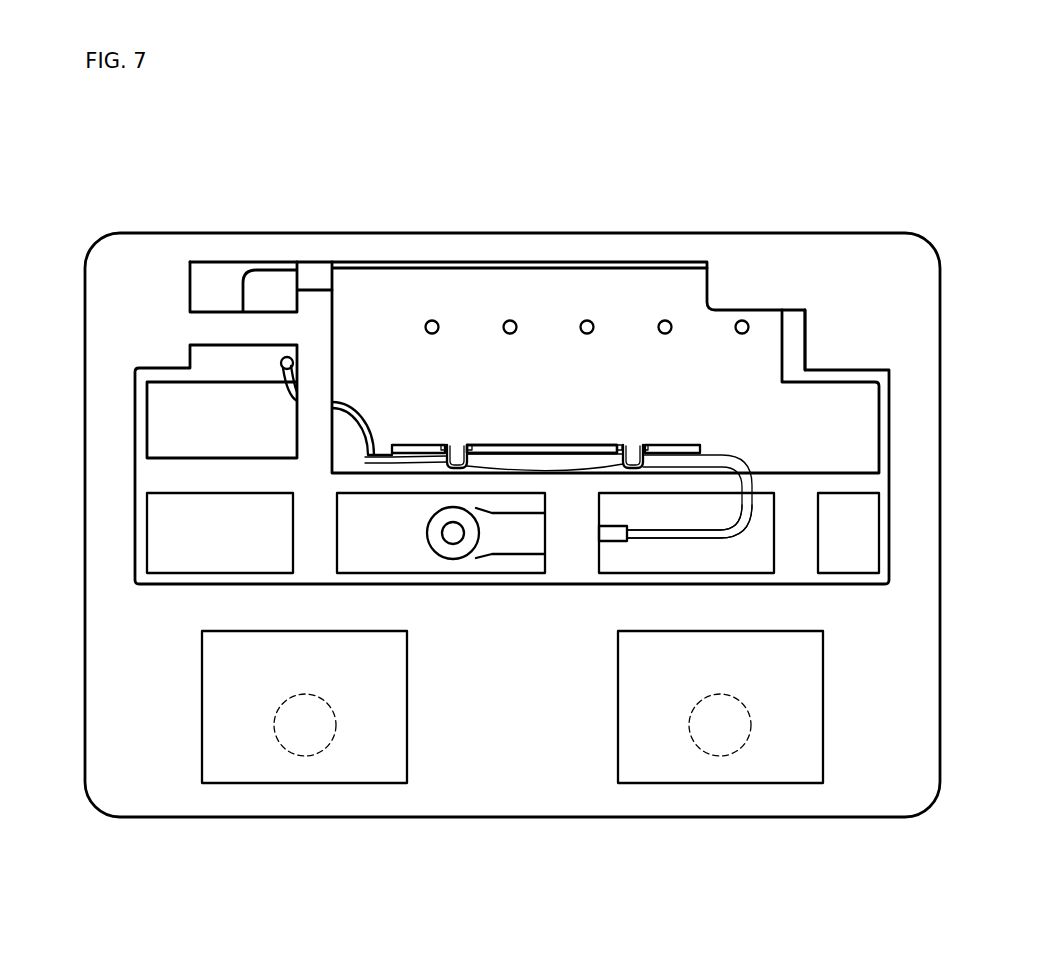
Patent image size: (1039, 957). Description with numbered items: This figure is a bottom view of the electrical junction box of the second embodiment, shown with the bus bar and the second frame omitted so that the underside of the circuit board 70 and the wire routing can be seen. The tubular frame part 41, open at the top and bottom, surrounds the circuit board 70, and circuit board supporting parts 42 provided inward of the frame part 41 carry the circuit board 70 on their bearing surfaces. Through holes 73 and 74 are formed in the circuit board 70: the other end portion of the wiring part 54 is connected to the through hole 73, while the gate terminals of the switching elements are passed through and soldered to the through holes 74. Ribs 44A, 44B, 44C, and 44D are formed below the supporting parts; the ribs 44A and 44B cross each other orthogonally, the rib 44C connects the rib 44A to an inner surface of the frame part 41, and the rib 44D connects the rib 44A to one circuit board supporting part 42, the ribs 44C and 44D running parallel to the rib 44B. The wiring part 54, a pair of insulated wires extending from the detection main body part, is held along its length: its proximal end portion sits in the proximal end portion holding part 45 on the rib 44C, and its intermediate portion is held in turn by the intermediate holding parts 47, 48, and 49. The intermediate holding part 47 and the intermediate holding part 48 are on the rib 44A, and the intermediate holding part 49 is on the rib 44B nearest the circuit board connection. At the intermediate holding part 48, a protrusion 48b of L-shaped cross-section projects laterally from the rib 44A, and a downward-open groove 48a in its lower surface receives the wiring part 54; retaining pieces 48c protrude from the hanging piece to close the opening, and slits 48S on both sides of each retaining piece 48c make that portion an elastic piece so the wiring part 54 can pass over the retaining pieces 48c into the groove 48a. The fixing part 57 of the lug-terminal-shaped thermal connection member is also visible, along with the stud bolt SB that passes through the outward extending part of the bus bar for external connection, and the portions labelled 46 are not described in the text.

The frame part 41 is at (940, 660).
The circuit board supporting part 42 is at (290, 280).
The circuit board 70 is at (390, 268).
The through hole 74 is at (579, 328).
The intermediate holding part 49 is at (340, 398).
The intermediate holding part 48 is at (397, 438).
The groove 48a is at (678, 468).
The protrusion 48b is at (548, 443).
The retaining piece 48c is at (457, 443).
The slit 48S is at (443, 445).
The intermediate holding part 47 is at (758, 463).
The through hole 73 is at (281, 357).
The wiring part 54 is at (291, 384).
The rib 44A is at (378, 487).
The rib 44B is at (300, 537).
The rib 44C is at (560, 538).
The rib 44D is at (795, 537).
The proximal end portion holding part 45 is at (604, 546).
The fixing part 57 is at (455, 553).
The mounting portion 46 is at (240, 774).
The stud bolt SB is at (305, 757).